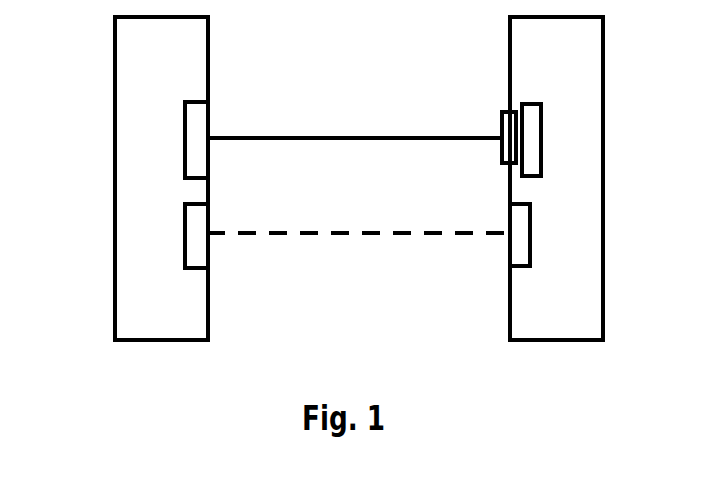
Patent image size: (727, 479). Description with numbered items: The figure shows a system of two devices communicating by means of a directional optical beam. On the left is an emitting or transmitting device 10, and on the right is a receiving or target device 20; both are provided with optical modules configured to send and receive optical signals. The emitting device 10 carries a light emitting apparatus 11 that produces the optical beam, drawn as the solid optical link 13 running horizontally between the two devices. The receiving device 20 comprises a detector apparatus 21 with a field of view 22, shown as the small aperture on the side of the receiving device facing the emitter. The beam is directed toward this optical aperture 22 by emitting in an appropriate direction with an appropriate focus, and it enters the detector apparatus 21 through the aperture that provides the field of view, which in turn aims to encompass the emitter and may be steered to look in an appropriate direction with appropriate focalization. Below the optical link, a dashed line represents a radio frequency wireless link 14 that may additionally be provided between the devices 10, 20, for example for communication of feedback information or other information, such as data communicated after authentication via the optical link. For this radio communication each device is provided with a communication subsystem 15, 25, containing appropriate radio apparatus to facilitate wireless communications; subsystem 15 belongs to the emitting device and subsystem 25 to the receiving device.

The emitting device 10 is at (150, 318).
The light emitting apparatus 11 is at (183, 148).
The optical link 13 is at (325, 138).
The radio frequency wireless link 14 is at (355, 235).
The communication subsystem 15 is at (198, 250).
The receiving device 20 is at (567, 305).
The detector apparatus 21 is at (537, 155).
The field of view 22 is at (508, 128).
The communication subsystem 25 is at (508, 245).